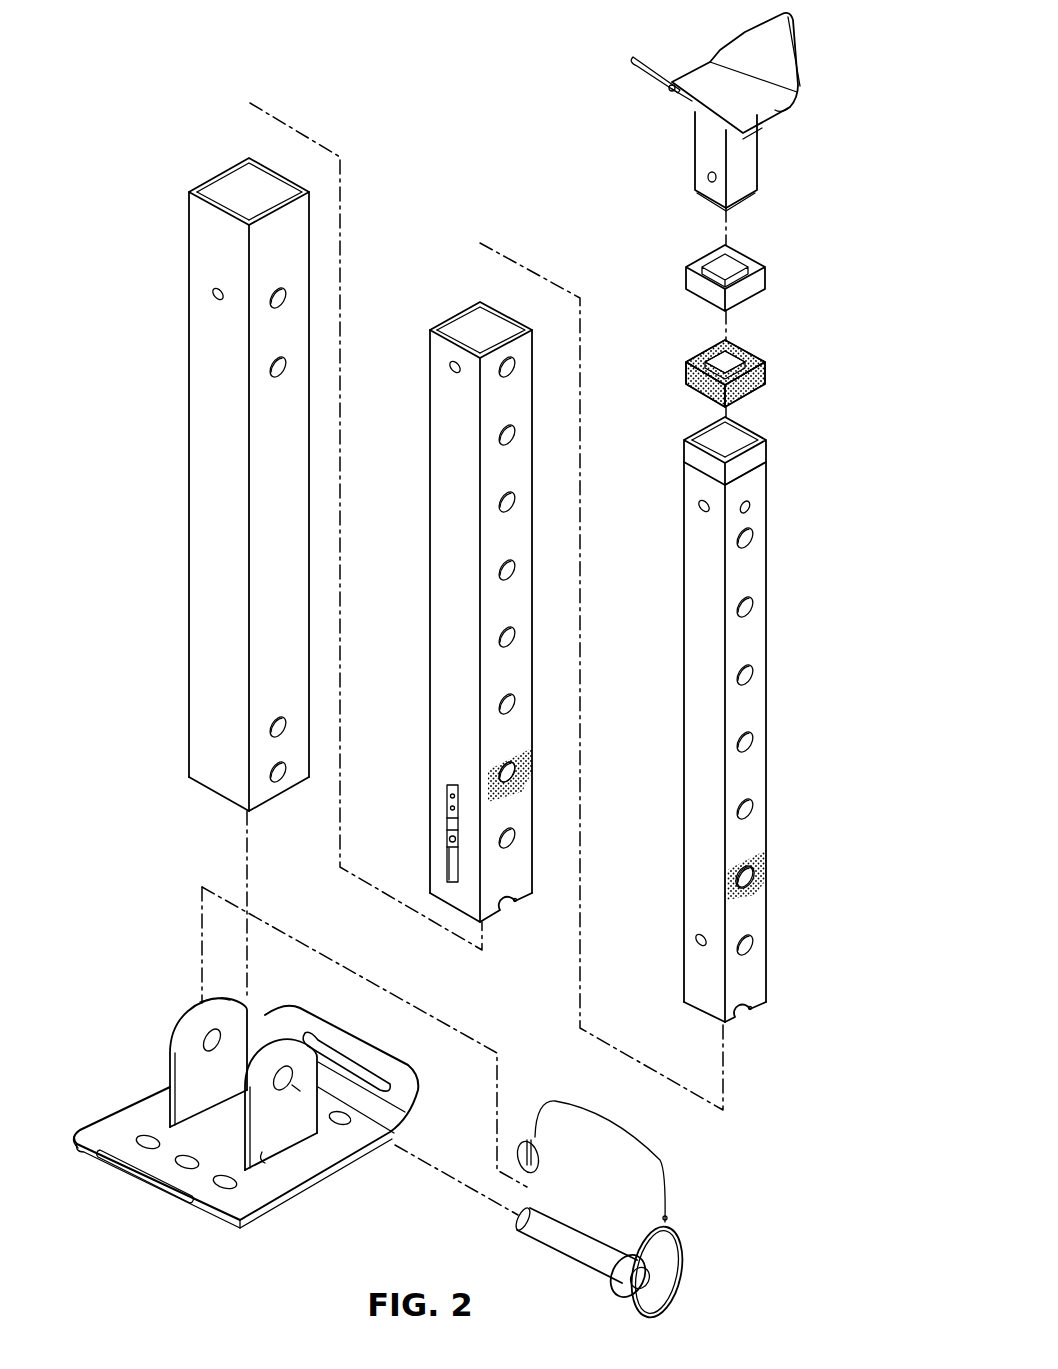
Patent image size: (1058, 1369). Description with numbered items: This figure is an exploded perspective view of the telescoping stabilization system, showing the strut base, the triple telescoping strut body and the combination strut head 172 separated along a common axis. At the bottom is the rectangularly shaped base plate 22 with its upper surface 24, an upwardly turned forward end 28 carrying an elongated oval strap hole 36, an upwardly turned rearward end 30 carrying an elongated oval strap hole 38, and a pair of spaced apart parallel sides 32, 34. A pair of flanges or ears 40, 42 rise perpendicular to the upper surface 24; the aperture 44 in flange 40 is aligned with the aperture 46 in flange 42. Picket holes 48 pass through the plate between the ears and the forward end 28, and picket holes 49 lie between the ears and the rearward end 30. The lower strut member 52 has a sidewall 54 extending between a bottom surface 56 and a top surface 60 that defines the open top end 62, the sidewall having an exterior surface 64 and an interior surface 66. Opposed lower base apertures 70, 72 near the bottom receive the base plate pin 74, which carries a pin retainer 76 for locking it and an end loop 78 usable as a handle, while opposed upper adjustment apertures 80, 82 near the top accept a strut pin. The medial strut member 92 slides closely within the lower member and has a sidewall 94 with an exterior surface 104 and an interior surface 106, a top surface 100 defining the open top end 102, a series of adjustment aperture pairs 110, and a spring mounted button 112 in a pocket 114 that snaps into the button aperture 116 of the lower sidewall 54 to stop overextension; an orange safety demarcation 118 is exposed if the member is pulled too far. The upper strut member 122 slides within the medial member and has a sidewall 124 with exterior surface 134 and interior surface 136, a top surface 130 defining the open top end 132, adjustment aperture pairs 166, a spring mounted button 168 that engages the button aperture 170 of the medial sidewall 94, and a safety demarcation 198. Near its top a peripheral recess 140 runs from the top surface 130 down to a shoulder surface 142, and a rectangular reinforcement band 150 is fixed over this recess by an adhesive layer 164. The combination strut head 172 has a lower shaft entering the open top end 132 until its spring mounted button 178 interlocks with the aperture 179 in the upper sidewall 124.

The base plate 22 is at (233, 1119).
The upper surface 24 is at (229, 1133).
The upwardly turned forward end 28 is at (95, 1147).
The upwardly turned rearward end 30 is at (336, 1080).
The side 32 is at (250, 1222).
The side 34 is at (176, 1052).
The elongated oval strap hole 36 is at (140, 1175).
The elongated oval strap hole 38 is at (352, 1068).
The flange or ear 40 is at (258, 1150).
The flange or ear 42 is at (200, 1055).
The aperture 44 is at (300, 1093).
The aperture 46 is at (205, 1028).
The picket holes 48 is at (130, 1129).
The picket holes 49 is at (349, 1134).
The lower strut member 52 is at (200, 458).
The sidewall 54 is at (200, 625).
The bottom surface 56 is at (215, 797).
The top surface 60 is at (197, 188).
The open top end 62 is at (236, 165).
The exterior surface 64 is at (218, 443).
The interior surface 66 is at (222, 190).
The lower base aperture 70 is at (275, 760).
The lower base aperture 72 is at (275, 715).
The base plate pin 74 is at (553, 1237).
The base plate pin retainer 76 is at (665, 1186).
The end loop 78 is at (683, 1272).
The upper adjustment aperture 80 is at (274, 360).
The upper adjustment aperture 82 is at (274, 292).
The medial strut member 92 is at (435, 630).
The sidewall 94 is at (450, 664).
The top surface 100 is at (447, 330).
The open top end 102 is at (477, 308).
The exterior surface 104 is at (433, 447).
The interior surface 106 is at (460, 330).
The adjustment aperture pairs 110 is at (505, 920).
The spring mounted button 112 is at (452, 838).
The pocket 114 is at (453, 878).
The button aperture 116 is at (212, 297).
The safety bar or demarcation 118 is at (487, 770).
The upper strut member 122 is at (725, 769).
The sidewall 124 is at (697, 830).
The top surface 130 is at (725, 437).
The open top end 132 is at (709, 425).
The exterior surface 134 is at (693, 606).
The interior surface 136 is at (742, 437).
The peripheral recess 140 is at (758, 455).
The shoulder surface 142 is at (760, 468).
The reinforcement band 150 is at (767, 249).
The adhesive layer 164 is at (752, 357).
The adjustment aperture pairs 166 is at (738, 1032).
The spring mounted button 168 is at (698, 945).
The button aperture 170 is at (453, 375).
The combination strut head 172 is at (747, 112).
The spring mounted button 178 is at (708, 177).
The aperture 179 is at (698, 509).
The safety bar or demarcation 198 is at (757, 875).